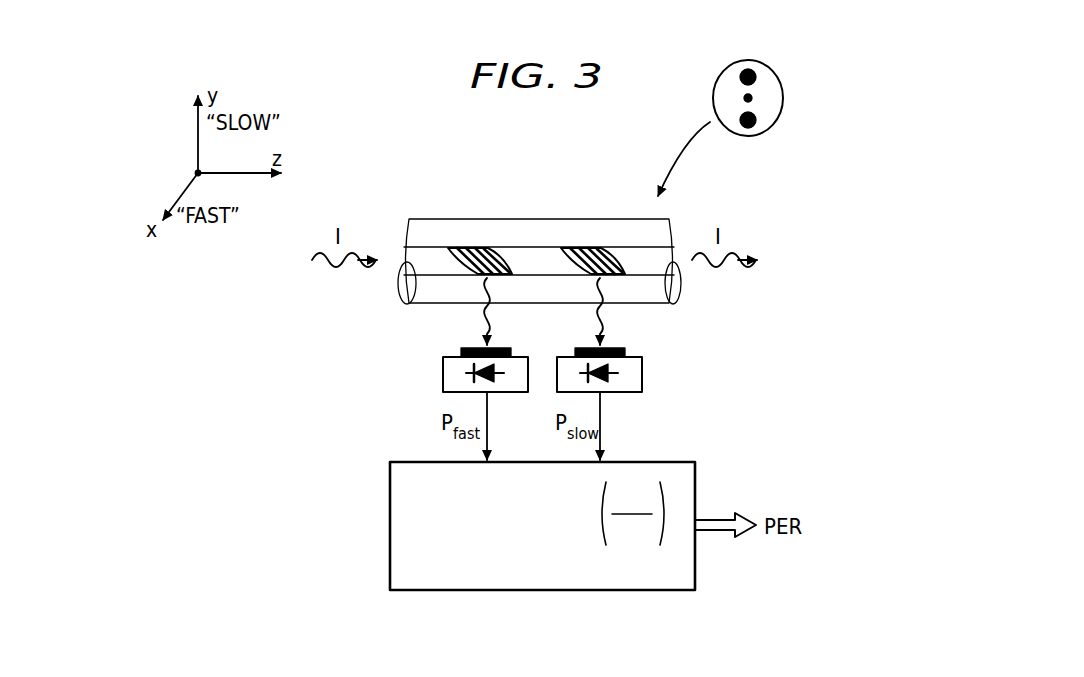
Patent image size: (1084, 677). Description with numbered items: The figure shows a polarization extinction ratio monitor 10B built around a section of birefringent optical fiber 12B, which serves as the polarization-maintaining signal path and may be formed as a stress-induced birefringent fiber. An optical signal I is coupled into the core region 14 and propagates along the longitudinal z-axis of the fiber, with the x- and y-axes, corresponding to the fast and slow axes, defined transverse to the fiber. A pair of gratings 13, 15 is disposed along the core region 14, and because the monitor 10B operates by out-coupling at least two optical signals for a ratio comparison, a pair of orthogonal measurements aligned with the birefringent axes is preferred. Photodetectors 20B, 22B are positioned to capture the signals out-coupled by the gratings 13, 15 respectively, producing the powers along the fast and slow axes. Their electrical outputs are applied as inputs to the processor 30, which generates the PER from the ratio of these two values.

The PER monitor 10B is at (282, 422).
The birefringent optical fiber 12B is at (420, 225).
The grating 13 is at (486, 247).
The core region 14 is at (406, 287).
The grating 15 is at (599, 247).
The photodetector 20B is at (526, 356).
The photodetector 22B is at (640, 356).
The processor 30 is at (390, 522).